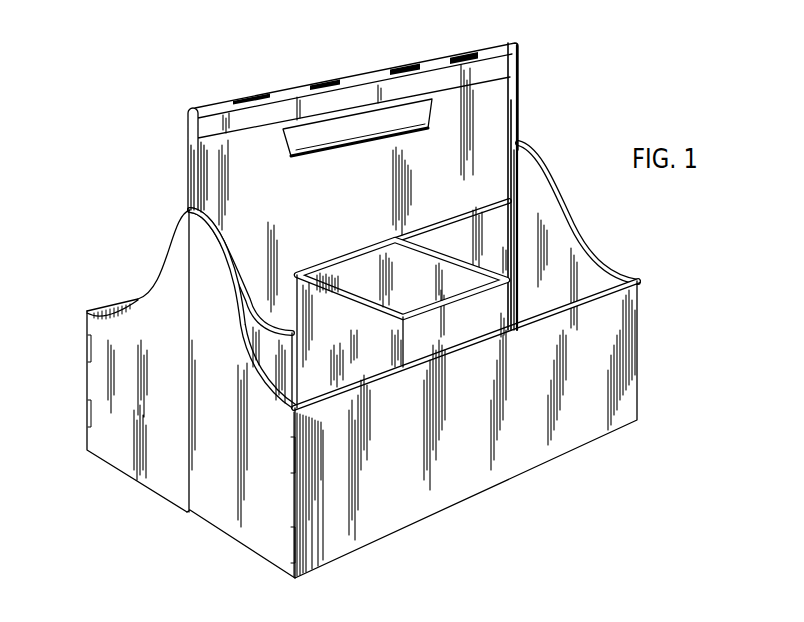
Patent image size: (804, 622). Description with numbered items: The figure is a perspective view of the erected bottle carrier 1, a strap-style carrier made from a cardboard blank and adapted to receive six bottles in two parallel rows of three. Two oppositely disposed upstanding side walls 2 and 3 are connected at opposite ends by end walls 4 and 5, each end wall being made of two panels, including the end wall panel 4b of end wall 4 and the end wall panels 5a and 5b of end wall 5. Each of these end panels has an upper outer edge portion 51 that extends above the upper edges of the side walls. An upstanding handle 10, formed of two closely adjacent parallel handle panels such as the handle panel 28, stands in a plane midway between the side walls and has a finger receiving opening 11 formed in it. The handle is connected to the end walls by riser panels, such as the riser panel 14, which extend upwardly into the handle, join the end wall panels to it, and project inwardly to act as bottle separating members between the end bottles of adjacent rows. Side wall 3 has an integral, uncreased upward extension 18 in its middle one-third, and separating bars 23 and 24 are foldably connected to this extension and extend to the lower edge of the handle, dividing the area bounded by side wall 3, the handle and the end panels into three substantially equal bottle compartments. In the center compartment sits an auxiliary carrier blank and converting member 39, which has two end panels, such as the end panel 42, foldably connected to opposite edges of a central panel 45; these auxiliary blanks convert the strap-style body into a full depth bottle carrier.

The bottle carrier 1 is at (537, 55).
The side wall 2 is at (130, 298).
The side wall 3 is at (482, 409).
The end wall 4 is at (564, 214).
The end wall panel 4b is at (568, 243).
The end wall 5 is at (170, 437).
The end wall panel 5a is at (122, 452).
The end wall panel 5b is at (240, 532).
The handle 10 is at (517, 92).
The finger receiving opening 11 is at (310, 152).
The riser panel 14 is at (498, 248).
The upward extension 18 is at (487, 309).
The separating bar 23 is at (336, 329).
The separating bar 24 is at (448, 252).
The handle panel 28 is at (338, 215).
The auxiliary carrier blank and converting member 39 is at (371, 256).
The end panel 42 is at (426, 288).
The central panel 45 is at (368, 286).
The upper outer edge portion 51 is at (177, 222).